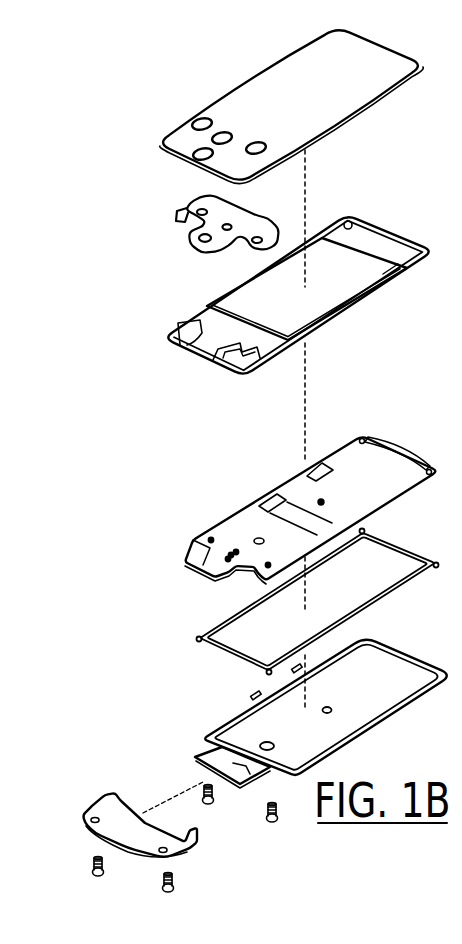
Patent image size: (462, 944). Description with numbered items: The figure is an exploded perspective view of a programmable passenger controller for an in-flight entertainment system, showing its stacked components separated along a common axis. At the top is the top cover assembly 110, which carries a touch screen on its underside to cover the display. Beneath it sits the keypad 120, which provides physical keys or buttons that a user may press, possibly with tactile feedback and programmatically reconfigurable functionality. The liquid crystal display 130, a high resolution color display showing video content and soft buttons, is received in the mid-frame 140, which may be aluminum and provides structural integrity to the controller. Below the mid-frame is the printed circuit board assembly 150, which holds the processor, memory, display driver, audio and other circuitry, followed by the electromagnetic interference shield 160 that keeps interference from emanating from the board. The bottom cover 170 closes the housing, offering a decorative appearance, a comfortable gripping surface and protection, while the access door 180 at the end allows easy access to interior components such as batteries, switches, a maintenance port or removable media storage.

The top cover assembly 110 is at (157, 120).
The keypad 120 is at (183, 213).
The liquid crystal display (LCD) 130 is at (258, 293).
The mid-frame 140 is at (187, 354).
The printed circuit board assembly (PCBA) 150 is at (237, 517).
The electromagnetic interference (EMI) shield 160 is at (225, 618).
The bottom cover 170 is at (230, 718).
The access door 180 is at (103, 807).